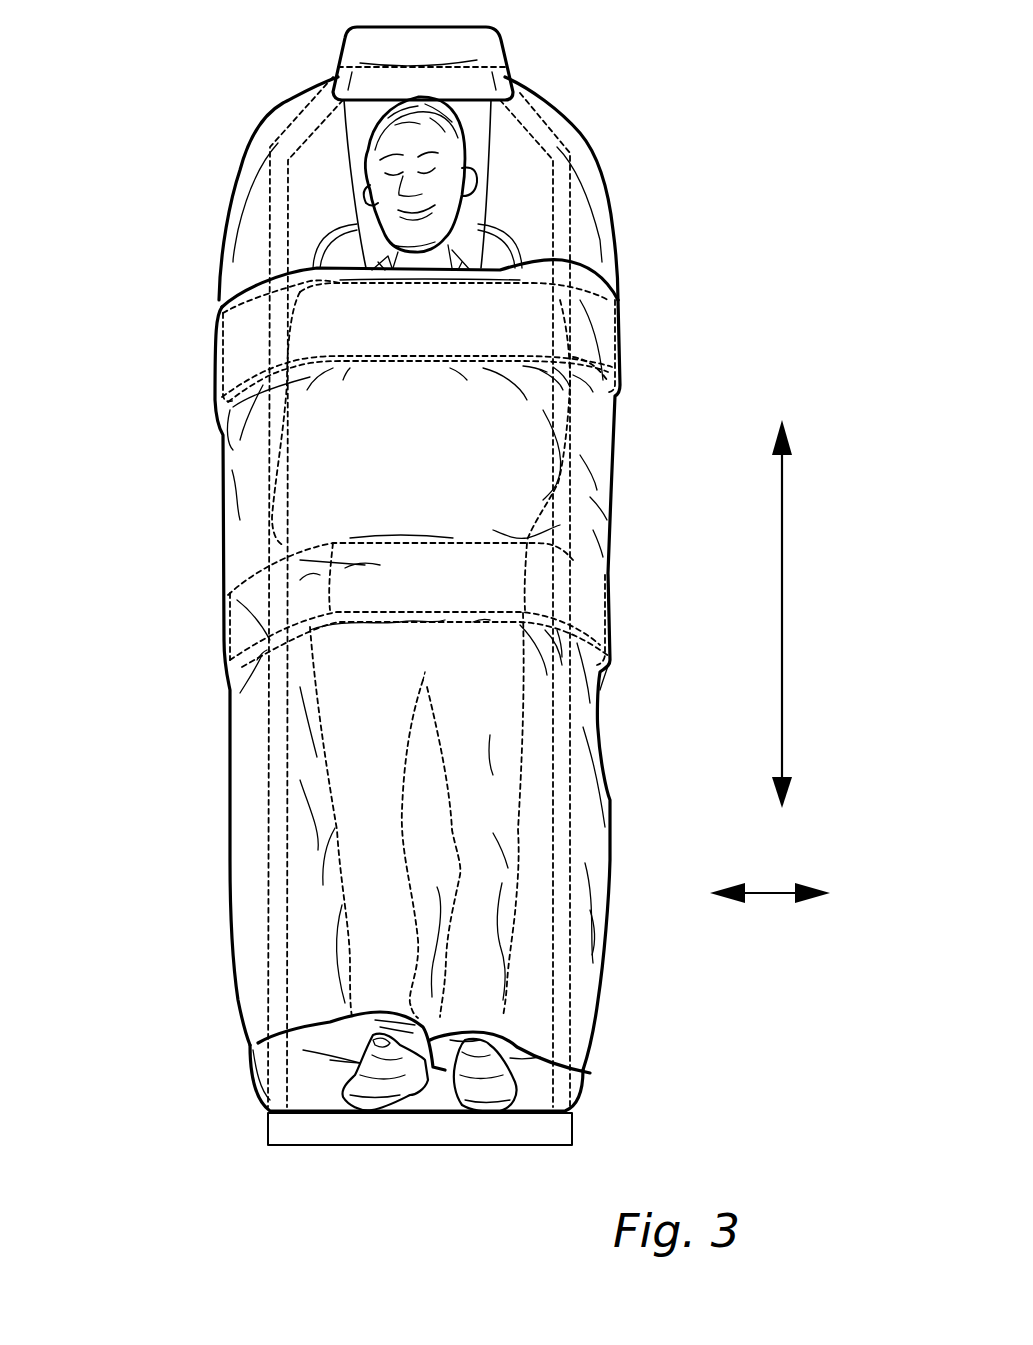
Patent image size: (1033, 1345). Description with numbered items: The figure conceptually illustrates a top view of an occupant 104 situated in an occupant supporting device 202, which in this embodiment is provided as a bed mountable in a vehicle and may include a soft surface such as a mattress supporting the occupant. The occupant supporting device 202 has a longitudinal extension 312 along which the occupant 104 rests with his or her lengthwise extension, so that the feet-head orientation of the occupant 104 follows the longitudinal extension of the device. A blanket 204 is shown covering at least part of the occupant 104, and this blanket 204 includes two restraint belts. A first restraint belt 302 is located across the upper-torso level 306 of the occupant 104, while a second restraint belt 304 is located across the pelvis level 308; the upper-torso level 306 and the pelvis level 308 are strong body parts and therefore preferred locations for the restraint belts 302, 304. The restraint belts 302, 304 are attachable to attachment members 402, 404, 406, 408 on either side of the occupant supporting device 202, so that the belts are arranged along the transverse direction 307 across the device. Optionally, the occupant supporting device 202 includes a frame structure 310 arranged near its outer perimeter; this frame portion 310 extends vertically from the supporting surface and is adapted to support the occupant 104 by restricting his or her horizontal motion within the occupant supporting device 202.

The occupant 104 is at (487, 142).
The occupant supporting device 202 is at (600, 168).
The blanket 204 is at (597, 490).
The first restraint belt 302 is at (585, 330).
The second restraint belt 304 is at (573, 603).
The upper-torso level 306 is at (495, 268).
The transverse direction 307 is at (773, 897).
The pelvis level 308 is at (342, 562).
The frame structure 310 is at (278, 781).
The longitudinal extension 312 is at (781, 667).
The attachment member 402 is at (213, 394).
The attachment member 404 is at (220, 591).
The attachment member 406 is at (620, 397).
The attachment member 408 is at (603, 670).